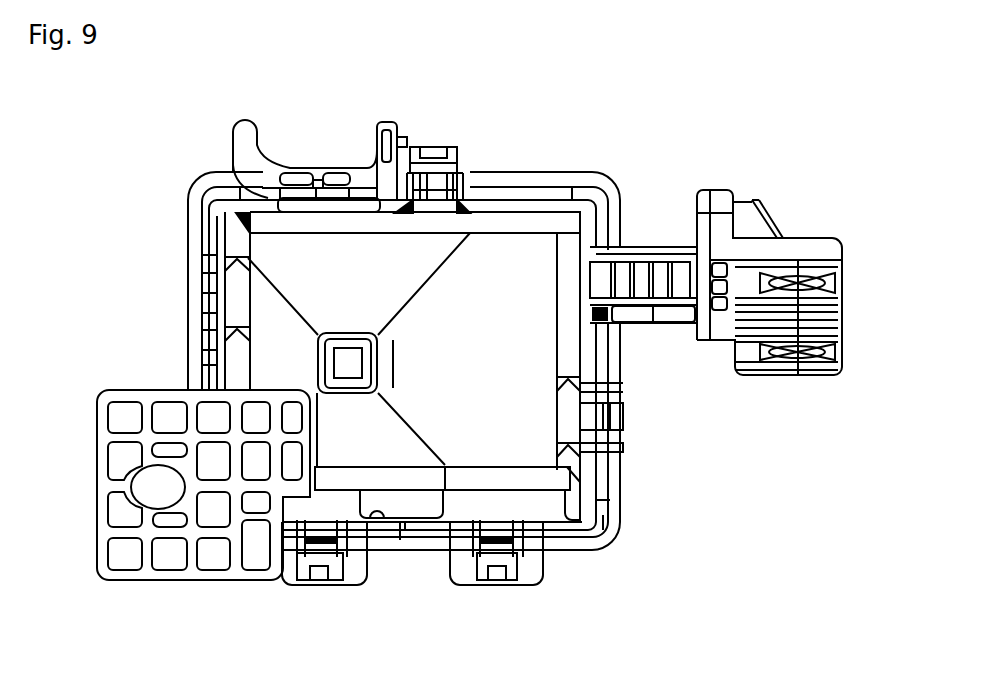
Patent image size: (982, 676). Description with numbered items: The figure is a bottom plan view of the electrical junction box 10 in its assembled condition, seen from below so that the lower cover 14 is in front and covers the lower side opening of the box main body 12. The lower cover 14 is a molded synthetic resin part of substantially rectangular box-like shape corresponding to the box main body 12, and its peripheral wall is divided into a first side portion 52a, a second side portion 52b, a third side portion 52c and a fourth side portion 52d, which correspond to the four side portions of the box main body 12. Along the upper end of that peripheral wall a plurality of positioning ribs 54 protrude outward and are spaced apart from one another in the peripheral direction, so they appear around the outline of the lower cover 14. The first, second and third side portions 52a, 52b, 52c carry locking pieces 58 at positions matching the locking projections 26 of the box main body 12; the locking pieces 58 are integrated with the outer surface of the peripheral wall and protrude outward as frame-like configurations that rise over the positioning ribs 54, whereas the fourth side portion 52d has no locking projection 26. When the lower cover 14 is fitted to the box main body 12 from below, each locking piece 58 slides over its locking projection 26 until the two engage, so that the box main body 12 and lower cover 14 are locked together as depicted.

The electrical junction box 10 is at (791, 52).
The box main body 12 is at (705, 165).
The lower cover 14 is at (497, 199).
The locking projection 26 is at (437, 168).
The first side portion 52a is at (273, 210).
The second side portion 52b is at (590, 342).
The third side portion 52c is at (558, 518).
The fourth side portion 52d is at (225, 318).
The positioning rib 54 is at (543, 203).
The locking piece 58 is at (458, 170).